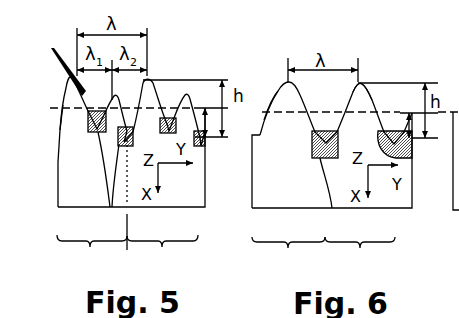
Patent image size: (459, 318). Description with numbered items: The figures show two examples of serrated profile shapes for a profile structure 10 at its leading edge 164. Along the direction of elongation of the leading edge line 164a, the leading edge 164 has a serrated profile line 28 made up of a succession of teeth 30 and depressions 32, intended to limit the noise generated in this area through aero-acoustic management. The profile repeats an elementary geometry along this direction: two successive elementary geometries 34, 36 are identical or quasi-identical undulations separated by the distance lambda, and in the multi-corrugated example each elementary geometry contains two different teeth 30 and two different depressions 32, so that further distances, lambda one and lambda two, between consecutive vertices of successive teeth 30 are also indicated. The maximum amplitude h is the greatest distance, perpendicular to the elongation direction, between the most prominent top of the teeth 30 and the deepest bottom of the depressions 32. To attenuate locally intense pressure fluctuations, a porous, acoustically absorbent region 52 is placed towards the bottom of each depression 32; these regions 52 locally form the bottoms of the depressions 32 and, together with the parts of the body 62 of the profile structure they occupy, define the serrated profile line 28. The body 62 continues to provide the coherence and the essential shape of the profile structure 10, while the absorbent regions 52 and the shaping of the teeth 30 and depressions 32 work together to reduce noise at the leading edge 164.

In FIG. 6, the component assembly 10 is at (453, 112).
In FIG. 5, the serrated profile line 28 is at (150, 88).
In FIG. 6, the serrated profile line 28 is at (372, 93).
In FIG. 5, the teeth 30 is at (61, 62).
In FIG. 6, the teeth 30 is at (361, 85).
In FIG. 5, the depressions 32 is at (112, 191).
In FIG. 6, the depressions 32 is at (331, 197).
In FIG. 5, the elementary geometry 34 is at (127, 255).
In FIG. 6, the elementary geometry 36 is at (323, 256).
In FIG. 5, the porous acoustically absorbent region 52 is at (90, 132).
In FIG. 6, the porous acoustically absorbent region 52 is at (409, 160).
In FIG. 5, the body 62 is at (70, 183).
In FIG. 6, the body 62 is at (267, 187).
In FIG. 5, the leading edge 164 is at (57, 121).
In FIG. 6, the leading edge 164 is at (274, 102).
In FIG. 6, the leading edge line 164a is at (364, 93).